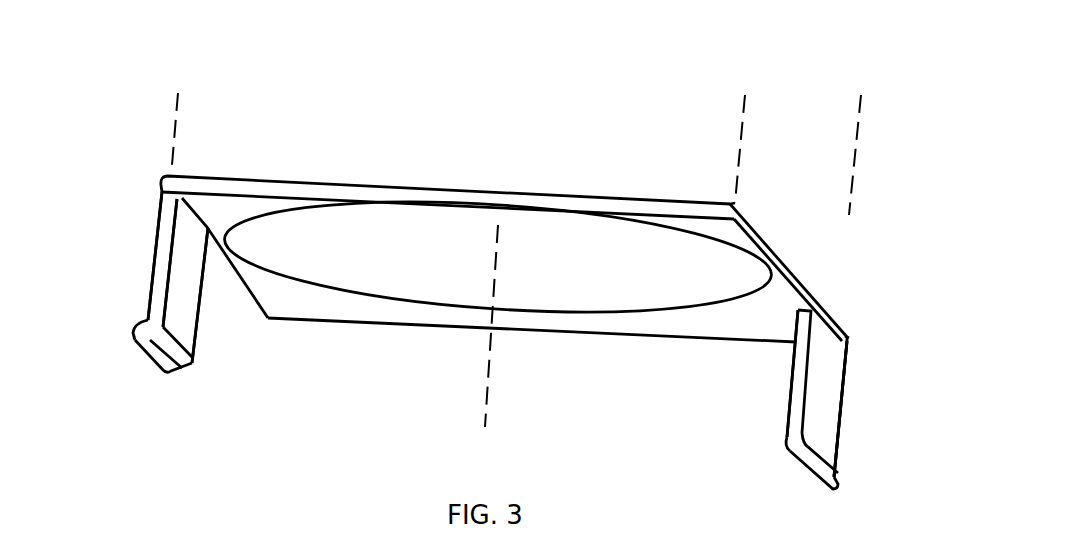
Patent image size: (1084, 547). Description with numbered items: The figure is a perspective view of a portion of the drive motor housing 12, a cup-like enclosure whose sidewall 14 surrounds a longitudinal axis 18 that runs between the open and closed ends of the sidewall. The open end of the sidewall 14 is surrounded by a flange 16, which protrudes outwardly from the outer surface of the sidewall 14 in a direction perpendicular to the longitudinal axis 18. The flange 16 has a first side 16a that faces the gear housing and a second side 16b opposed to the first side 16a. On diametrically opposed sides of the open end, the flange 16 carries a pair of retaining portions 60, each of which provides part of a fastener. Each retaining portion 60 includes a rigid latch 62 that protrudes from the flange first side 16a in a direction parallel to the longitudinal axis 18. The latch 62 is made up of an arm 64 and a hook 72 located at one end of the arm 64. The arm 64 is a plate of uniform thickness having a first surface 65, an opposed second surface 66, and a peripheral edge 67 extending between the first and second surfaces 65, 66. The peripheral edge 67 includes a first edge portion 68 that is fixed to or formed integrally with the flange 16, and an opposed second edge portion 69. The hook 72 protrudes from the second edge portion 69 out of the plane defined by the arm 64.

The drive motor housing 12 is at (213, 42).
The sidewall 14 is at (833, 188).
The flange 16 is at (838, 272).
The second side 16b is at (794, 269).
The first side 16a is at (674, 334).
The longitudinal axis 18 is at (490, 381).
The retaining portion 60 is at (108, 358).
The rigid latch 62 is at (492, 340).
The arm 64 is at (158, 225).
The first surface 65 is at (153, 263).
The second surface 66 is at (187, 291).
The peripheral edge 67 is at (167, 317).
The first edge portion 68 is at (197, 220).
The second edge portion 69 is at (185, 362).
The hook 72 is at (153, 363).